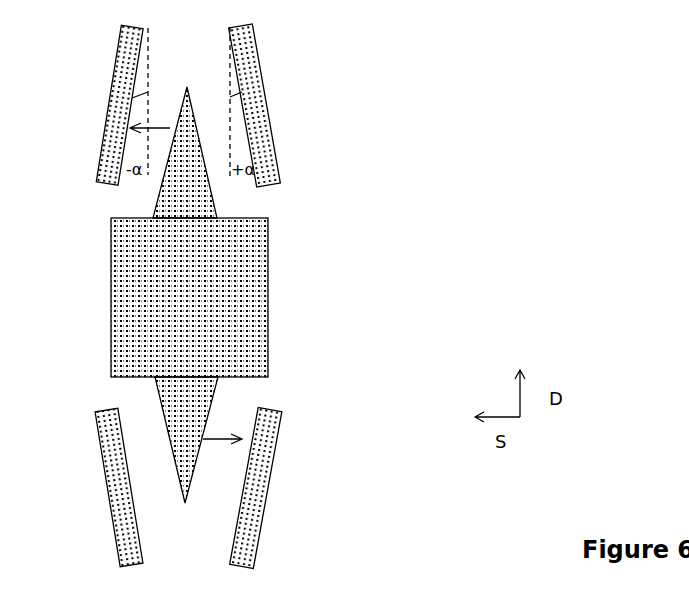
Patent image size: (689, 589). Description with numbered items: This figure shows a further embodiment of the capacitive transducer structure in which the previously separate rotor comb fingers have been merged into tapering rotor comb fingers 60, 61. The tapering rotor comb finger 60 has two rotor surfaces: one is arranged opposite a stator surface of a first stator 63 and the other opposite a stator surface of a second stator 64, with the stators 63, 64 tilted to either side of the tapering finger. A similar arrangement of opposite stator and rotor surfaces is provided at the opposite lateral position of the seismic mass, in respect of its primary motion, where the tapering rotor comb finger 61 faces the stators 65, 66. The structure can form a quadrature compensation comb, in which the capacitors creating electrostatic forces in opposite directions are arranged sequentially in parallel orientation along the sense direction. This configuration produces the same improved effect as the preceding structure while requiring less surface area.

The tapering rotor comb finger 60 is at (183, 98).
The tapering rotor comb finger 61 is at (185, 503).
The first stator 63 is at (273, 110).
The second stator 64 is at (113, 107).
The first lower tilted slat 65 is at (268, 495).
The second lower tilted slat 66 is at (110, 492).